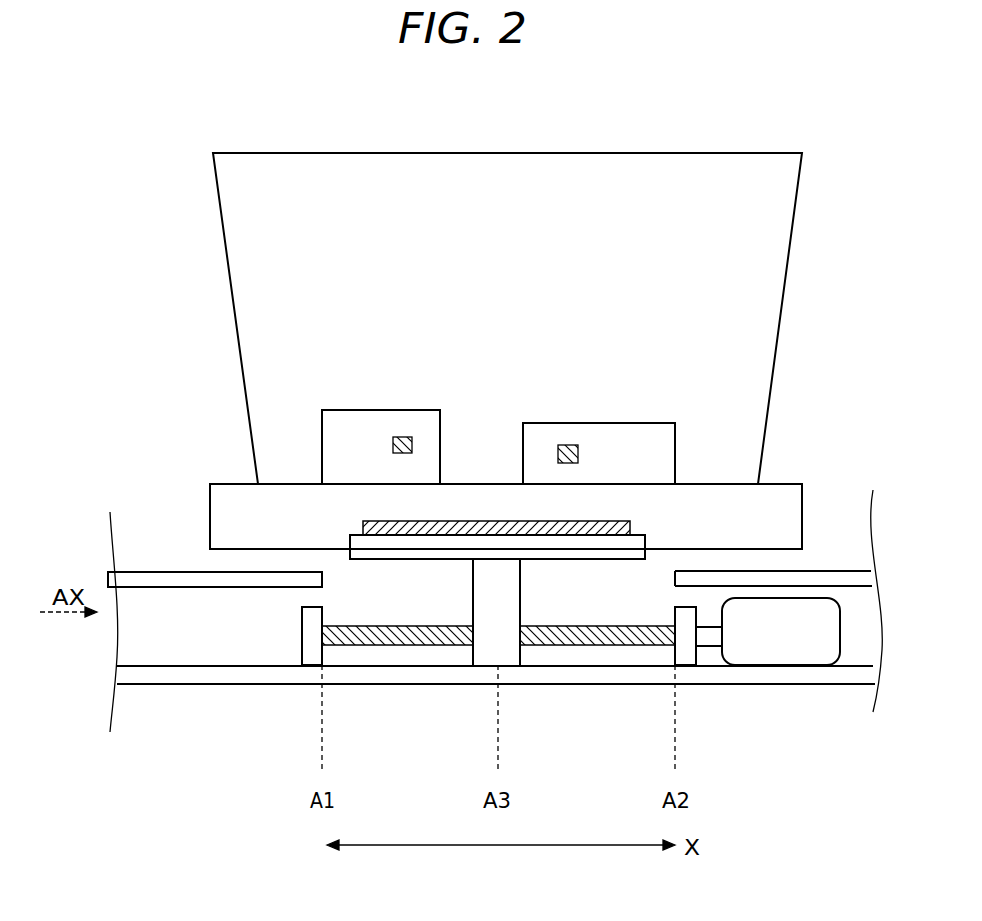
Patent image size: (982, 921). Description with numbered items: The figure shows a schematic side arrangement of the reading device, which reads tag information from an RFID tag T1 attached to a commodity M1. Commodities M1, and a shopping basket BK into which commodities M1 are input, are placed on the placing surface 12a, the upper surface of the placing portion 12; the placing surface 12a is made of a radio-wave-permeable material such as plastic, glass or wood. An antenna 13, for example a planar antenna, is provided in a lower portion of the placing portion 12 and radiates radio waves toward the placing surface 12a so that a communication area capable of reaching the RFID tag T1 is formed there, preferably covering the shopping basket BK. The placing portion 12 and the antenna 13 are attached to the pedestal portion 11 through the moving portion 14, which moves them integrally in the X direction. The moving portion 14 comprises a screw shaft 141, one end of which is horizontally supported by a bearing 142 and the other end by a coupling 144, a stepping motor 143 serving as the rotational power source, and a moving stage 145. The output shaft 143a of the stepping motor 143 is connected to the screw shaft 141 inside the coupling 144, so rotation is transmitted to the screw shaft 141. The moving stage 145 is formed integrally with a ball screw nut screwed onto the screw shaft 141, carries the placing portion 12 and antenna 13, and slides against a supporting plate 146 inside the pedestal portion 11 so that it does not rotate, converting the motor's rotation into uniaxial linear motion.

The shopping basket BK is at (258, 152).
The pedestal portion 11 is at (142, 570).
The placing portion 12 is at (803, 520).
The placing surface 12a is at (790, 484).
The antenna 13 is at (487, 520).
The moving portion 14 is at (509, 676).
The screw shaft 141 is at (598, 645).
The bearing 142 is at (298, 648).
The stepping motor 143 is at (768, 667).
The output shaft 143a is at (710, 623).
The coupling 144 is at (697, 658).
The moving stage 145 is at (521, 587).
The supporting plate 146 is at (187, 684).
The commodity M1 is at (385, 410).
The RFID tag T1 is at (403, 437).